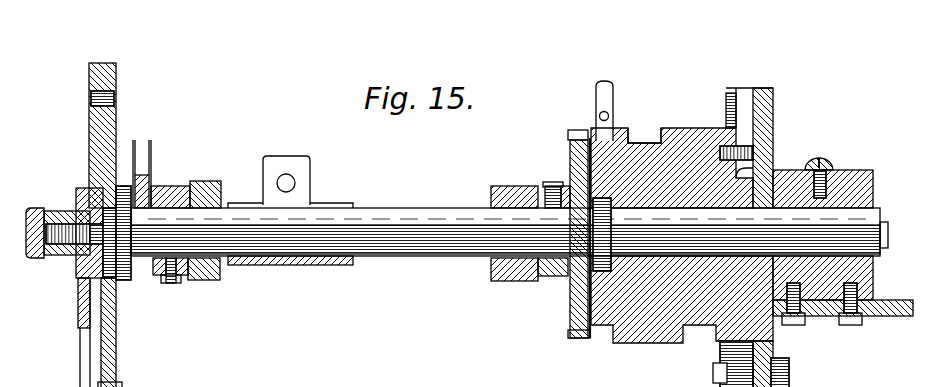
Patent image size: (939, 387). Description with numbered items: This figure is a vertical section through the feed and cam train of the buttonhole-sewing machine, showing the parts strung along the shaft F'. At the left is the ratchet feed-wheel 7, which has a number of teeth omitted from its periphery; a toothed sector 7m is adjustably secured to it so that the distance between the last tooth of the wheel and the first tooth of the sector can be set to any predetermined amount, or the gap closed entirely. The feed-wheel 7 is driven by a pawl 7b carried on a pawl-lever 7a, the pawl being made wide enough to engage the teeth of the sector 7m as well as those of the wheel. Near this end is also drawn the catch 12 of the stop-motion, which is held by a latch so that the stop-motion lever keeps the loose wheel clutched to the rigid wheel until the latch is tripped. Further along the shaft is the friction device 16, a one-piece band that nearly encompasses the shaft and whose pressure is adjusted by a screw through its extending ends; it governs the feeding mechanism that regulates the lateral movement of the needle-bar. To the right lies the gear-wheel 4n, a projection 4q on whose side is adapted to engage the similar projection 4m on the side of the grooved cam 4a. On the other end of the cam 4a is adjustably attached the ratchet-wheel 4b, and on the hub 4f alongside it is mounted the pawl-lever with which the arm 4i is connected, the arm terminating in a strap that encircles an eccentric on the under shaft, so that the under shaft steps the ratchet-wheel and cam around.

The toothed sector 7m is at (82, 126).
The pawl-lever 7a is at (72, 334).
The ratchet feed-wheel 7 is at (110, 327).
The pawl 7b is at (132, 384).
The catch 12 is at (143, 161).
The friction device 16 is at (298, 165).
The shaft F' is at (509, 216).
The gear-wheel 4n is at (562, 137).
The projection 4q is at (562, 154).
The projection 4m is at (570, 330).
The cam 4a is at (659, 118).
The ratchet-wheel 4b is at (752, 145).
The hub 4f is at (787, 162).
The arm 4i is at (768, 355).